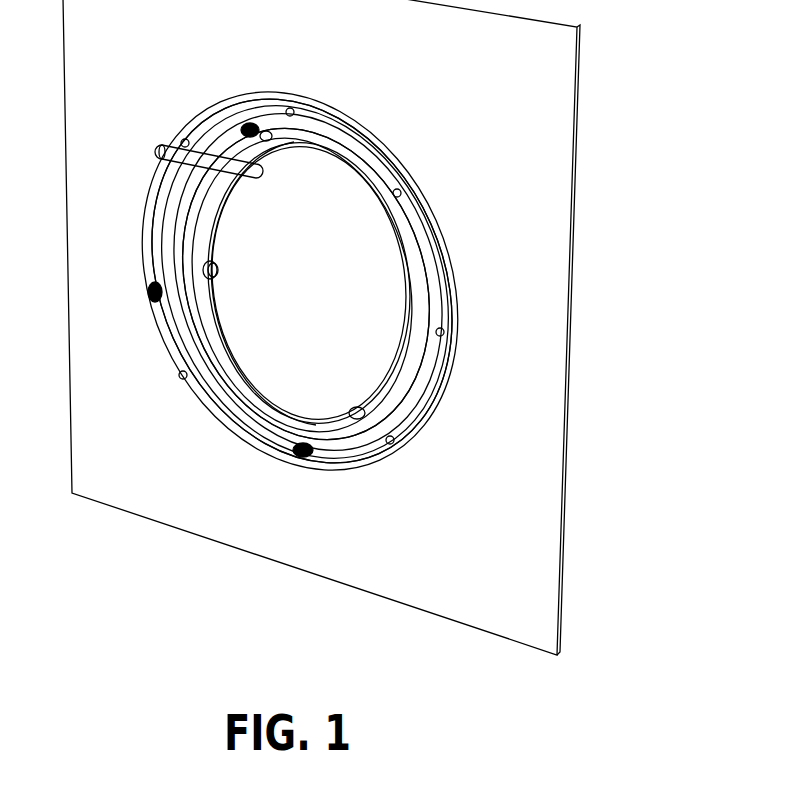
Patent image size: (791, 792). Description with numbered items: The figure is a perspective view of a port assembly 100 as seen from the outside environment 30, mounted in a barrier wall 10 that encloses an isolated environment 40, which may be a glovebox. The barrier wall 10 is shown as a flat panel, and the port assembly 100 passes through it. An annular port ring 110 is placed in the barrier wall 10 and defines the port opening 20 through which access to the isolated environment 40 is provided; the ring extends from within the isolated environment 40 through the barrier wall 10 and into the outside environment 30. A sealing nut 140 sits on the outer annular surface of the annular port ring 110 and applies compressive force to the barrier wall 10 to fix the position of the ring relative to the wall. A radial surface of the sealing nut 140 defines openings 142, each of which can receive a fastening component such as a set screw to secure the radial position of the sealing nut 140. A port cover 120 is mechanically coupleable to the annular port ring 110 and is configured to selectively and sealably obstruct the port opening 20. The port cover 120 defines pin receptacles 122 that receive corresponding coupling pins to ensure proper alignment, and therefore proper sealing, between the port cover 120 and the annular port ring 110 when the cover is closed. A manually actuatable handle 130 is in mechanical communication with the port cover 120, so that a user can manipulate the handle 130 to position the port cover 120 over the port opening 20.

The barrier wall 10 is at (538, 133).
The port opening 20 is at (261, 325).
The outside environment 30 is at (516, 601).
The isolated environment 40 is at (587, 502).
The port assembly 100 is at (437, 172).
The annular port ring 110 is at (420, 298).
The port cover 120 is at (397, 443).
The pin receptacles 122 is at (248, 128).
The handle 130 is at (190, 140).
The sealing nut 140 is at (352, 143).
The openings 142 is at (444, 334).